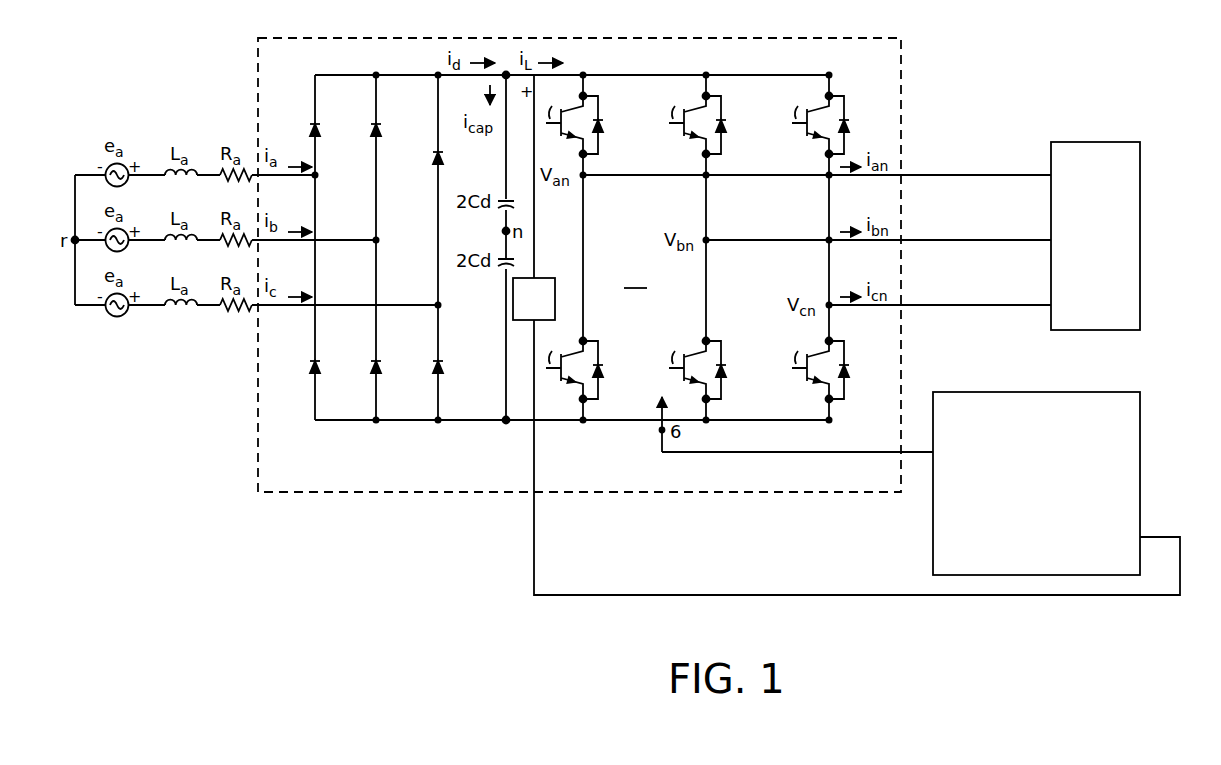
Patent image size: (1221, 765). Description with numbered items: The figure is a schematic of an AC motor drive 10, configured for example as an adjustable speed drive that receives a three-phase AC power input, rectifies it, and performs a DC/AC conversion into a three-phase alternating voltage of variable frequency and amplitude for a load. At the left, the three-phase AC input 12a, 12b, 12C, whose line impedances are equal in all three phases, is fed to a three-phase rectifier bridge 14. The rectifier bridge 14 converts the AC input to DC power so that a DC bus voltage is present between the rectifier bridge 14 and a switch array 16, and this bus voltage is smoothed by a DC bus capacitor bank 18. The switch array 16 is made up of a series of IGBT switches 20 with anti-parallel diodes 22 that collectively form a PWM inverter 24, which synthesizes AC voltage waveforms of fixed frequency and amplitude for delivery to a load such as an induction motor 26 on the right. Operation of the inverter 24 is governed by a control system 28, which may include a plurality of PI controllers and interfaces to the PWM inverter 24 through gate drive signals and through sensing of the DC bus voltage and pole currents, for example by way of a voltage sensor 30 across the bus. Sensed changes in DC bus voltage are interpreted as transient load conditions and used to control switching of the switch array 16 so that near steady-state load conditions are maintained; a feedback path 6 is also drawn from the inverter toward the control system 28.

The AC motor drive 10 is at (901, 70).
The three-phase AC input 12a is at (108, 166).
The three-phase AC input 12b is at (126, 230).
The three-phase AC input 12C is at (118, 317).
The three-phase rectifier bridge 14 is at (331, 440).
The switch array 16 is at (794, 279).
The DC bus capacitor bank 18 is at (515, 261).
The IGBT switches 20 is at (693, 244).
The anti-parallel diodes 22 is at (740, 227).
The PWM inverter 24 is at (636, 277).
The induction motor 26 is at (1142, 177).
The control system 28 is at (1142, 421).
The voltage sensor 30 is at (560, 298).
The feedback signal line 6 is at (797, 424).